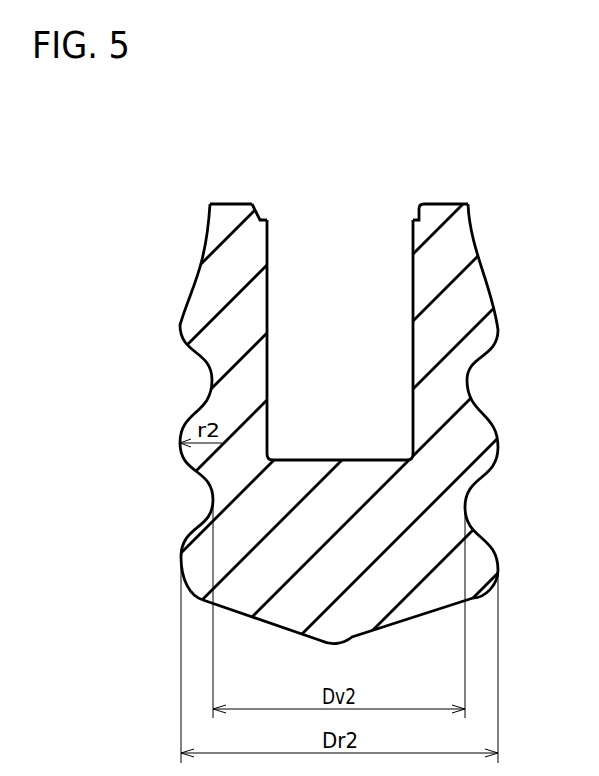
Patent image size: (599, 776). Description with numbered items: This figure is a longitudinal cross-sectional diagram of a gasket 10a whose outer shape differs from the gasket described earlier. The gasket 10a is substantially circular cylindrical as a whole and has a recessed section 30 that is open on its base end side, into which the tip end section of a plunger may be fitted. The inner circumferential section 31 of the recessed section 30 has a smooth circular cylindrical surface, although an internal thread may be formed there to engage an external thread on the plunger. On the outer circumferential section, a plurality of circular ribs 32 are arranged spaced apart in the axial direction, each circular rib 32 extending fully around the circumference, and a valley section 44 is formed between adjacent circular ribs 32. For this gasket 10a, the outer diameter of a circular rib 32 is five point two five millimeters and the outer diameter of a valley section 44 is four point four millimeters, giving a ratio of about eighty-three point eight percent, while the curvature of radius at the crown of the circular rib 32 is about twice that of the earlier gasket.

The gasket 10a is at (153, 153).
The recessed section 30 is at (328, 240).
The inner circumferential section 31 is at (413, 240).
The circular rib 32 is at (180, 324).
The valley section 44 is at (467, 379).